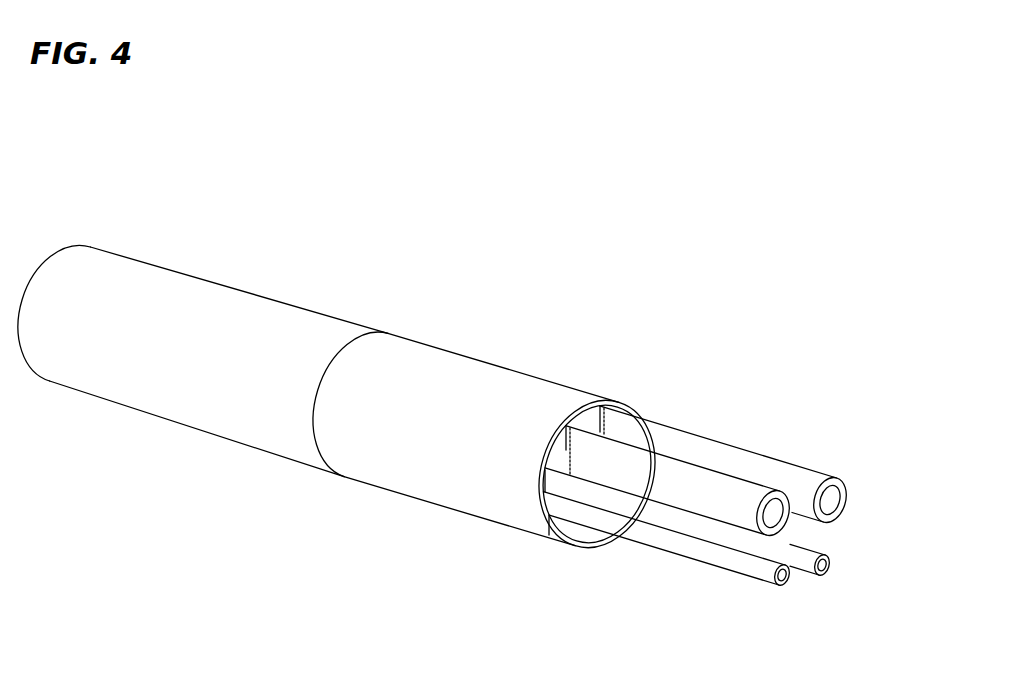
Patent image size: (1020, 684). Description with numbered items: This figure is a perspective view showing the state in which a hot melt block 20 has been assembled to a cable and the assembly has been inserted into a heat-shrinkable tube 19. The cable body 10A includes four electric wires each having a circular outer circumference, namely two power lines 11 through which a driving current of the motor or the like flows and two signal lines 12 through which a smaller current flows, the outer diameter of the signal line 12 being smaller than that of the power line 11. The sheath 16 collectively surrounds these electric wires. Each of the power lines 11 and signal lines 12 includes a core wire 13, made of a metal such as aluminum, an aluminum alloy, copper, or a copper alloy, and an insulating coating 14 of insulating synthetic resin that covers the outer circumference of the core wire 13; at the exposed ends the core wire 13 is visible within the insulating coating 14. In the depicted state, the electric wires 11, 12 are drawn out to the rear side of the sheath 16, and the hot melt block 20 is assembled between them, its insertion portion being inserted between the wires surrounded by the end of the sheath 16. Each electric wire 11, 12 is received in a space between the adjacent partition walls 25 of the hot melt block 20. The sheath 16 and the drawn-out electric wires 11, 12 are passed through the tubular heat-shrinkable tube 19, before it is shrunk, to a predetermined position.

The cable body 10A is at (281, 296).
The sheath 16 is at (182, 302).
The heat-shrinkable tube 19 is at (465, 367).
The partition walls 25 is at (593, 417).
The hot melt block 20 is at (572, 487).
The power lines 11 is at (647, 463).
The signal lines 12 is at (695, 552).
The core wire 13 is at (830, 500).
The insulating coating 14 is at (840, 481).